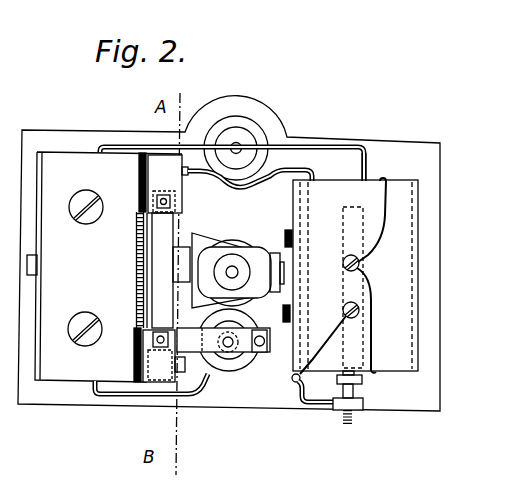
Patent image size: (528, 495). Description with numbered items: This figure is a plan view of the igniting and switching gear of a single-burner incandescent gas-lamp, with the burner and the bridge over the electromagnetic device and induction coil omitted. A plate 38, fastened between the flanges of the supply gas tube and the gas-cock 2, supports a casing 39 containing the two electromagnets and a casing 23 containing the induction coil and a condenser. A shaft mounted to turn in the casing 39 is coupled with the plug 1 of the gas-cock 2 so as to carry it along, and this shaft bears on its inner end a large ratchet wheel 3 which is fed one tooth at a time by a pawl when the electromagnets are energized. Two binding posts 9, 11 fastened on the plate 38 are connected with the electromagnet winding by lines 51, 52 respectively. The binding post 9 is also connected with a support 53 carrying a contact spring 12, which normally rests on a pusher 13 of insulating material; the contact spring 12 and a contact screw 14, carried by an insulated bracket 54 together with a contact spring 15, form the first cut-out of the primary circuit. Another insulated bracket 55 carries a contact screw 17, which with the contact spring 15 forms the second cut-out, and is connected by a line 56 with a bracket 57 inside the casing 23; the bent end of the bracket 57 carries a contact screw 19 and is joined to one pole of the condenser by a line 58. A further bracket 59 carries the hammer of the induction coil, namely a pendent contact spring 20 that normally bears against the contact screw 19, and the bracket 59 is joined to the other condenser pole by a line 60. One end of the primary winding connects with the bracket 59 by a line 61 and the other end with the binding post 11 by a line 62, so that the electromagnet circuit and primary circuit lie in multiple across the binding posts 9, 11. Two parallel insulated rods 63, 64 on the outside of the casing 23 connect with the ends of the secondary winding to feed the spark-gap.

The plug 1 is at (190, 290).
The gas-cock 2 is at (203, 240).
The ratchet wheel 3 is at (135, 293).
The binding post 9 is at (234, 352).
The binding post 11 is at (254, 136).
The contact spring 12 is at (233, 348).
The pusher 13 is at (185, 366).
The contact screw 14 is at (136, 345).
The contact spring 15 is at (162, 238).
The contact screw 17 is at (142, 205).
The contact screw 19 is at (348, 425).
The pendent contact spring 20 is at (357, 386).
The casing 23 is at (418, 355).
The plate 38 is at (436, 155).
The casing 39 is at (43, 398).
The line 51 is at (125, 396).
The line 52 is at (124, 143).
The support 53 is at (265, 341).
The bracket 54 is at (159, 356).
The bracket 55 is at (168, 184).
The line 56 is at (250, 170).
The bracket 57 is at (311, 402).
The line 58 is at (308, 362).
The bracket 59 is at (345, 292).
The line 60 is at (384, 230).
The line 61 is at (373, 330).
The line 62 is at (369, 170).
The rod 63 is at (283, 312).
The rod 64 is at (285, 238).